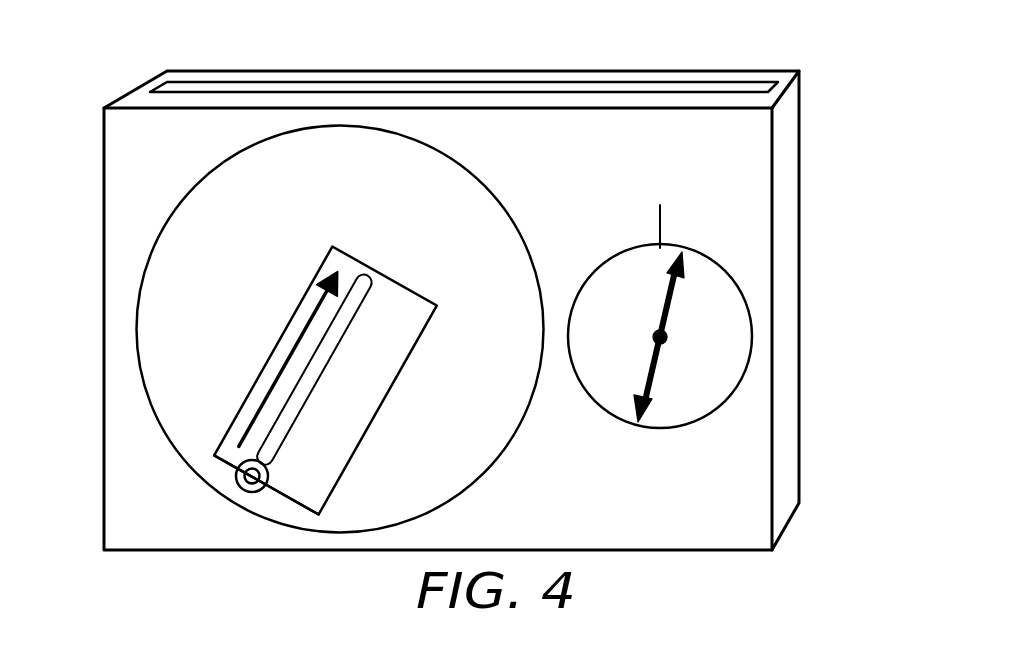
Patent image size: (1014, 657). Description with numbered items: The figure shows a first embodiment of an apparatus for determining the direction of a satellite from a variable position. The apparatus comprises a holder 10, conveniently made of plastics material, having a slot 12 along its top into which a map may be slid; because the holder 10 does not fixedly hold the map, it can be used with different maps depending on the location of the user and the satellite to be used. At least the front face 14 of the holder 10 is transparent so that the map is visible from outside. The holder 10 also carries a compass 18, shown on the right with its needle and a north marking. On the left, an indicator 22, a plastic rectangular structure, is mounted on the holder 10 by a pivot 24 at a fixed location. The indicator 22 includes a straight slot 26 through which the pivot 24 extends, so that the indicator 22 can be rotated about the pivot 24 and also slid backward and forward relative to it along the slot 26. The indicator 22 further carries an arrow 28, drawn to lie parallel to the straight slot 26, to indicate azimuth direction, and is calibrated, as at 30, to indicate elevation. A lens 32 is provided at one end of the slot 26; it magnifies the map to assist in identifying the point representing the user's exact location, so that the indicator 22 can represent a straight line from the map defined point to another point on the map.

The holder 10 is at (788, 257).
The slot 12 is at (595, 87).
The front face 14 is at (149, 165).
The compass 18 is at (720, 357).
The indicator 22 is at (380, 373).
The pivot 24 is at (357, 337).
The straight slot 26 is at (318, 508).
The arrow 28 is at (268, 405).
The calibration 30 is at (329, 428).
The lens 32 is at (237, 484).